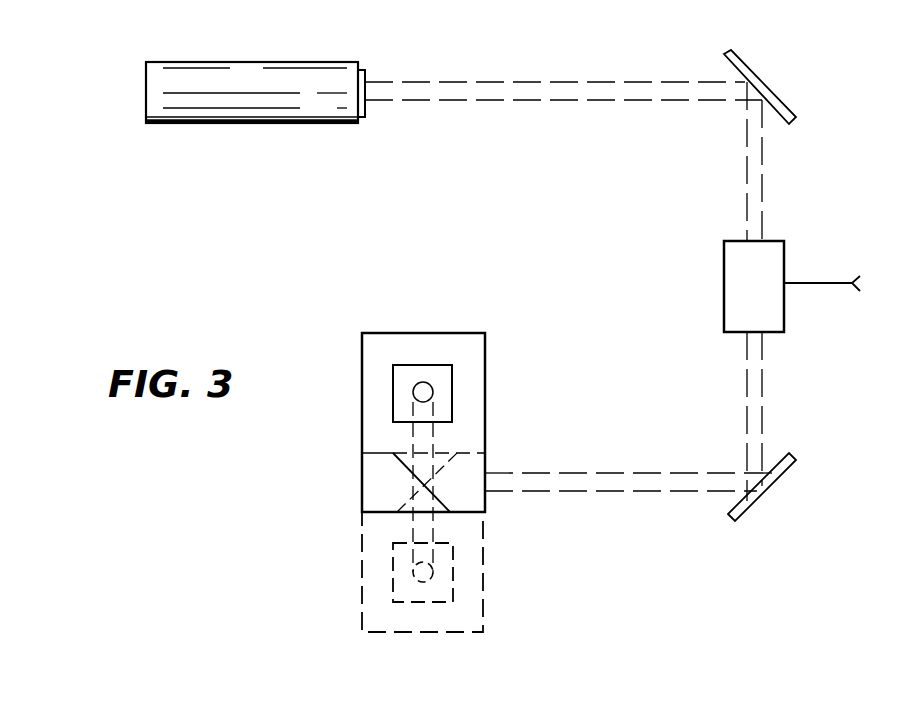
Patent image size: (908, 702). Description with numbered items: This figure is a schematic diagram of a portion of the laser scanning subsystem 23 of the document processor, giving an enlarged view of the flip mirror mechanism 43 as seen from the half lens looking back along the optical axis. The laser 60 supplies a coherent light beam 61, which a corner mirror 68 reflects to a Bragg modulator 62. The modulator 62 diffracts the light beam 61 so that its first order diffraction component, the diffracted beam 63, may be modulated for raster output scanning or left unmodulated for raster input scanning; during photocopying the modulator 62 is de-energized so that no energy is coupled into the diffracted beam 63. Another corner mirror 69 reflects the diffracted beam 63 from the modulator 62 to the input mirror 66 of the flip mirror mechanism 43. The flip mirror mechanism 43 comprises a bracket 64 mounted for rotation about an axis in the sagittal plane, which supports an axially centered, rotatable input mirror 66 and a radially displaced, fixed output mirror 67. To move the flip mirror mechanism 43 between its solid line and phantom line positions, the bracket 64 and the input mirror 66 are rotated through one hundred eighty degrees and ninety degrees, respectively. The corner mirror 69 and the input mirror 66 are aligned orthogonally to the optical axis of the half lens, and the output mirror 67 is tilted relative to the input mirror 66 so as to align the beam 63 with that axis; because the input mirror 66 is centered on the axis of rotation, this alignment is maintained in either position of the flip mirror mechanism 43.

The laser 60 is at (273, 67).
The light beam 61 is at (523, 88).
The corner mirror 68 is at (768, 93).
The laser scanning subsystem 23 is at (787, 191).
The Bragg modulator 62 is at (724, 283).
The corner mirror 69 is at (770, 490).
The first order diffraction component 63 is at (598, 485).
The flip mirror mechanism 43 is at (350, 356).
The bracket 64 is at (485, 405).
The output mirror 67 is at (404, 375).
The input mirror 66 is at (447, 502).